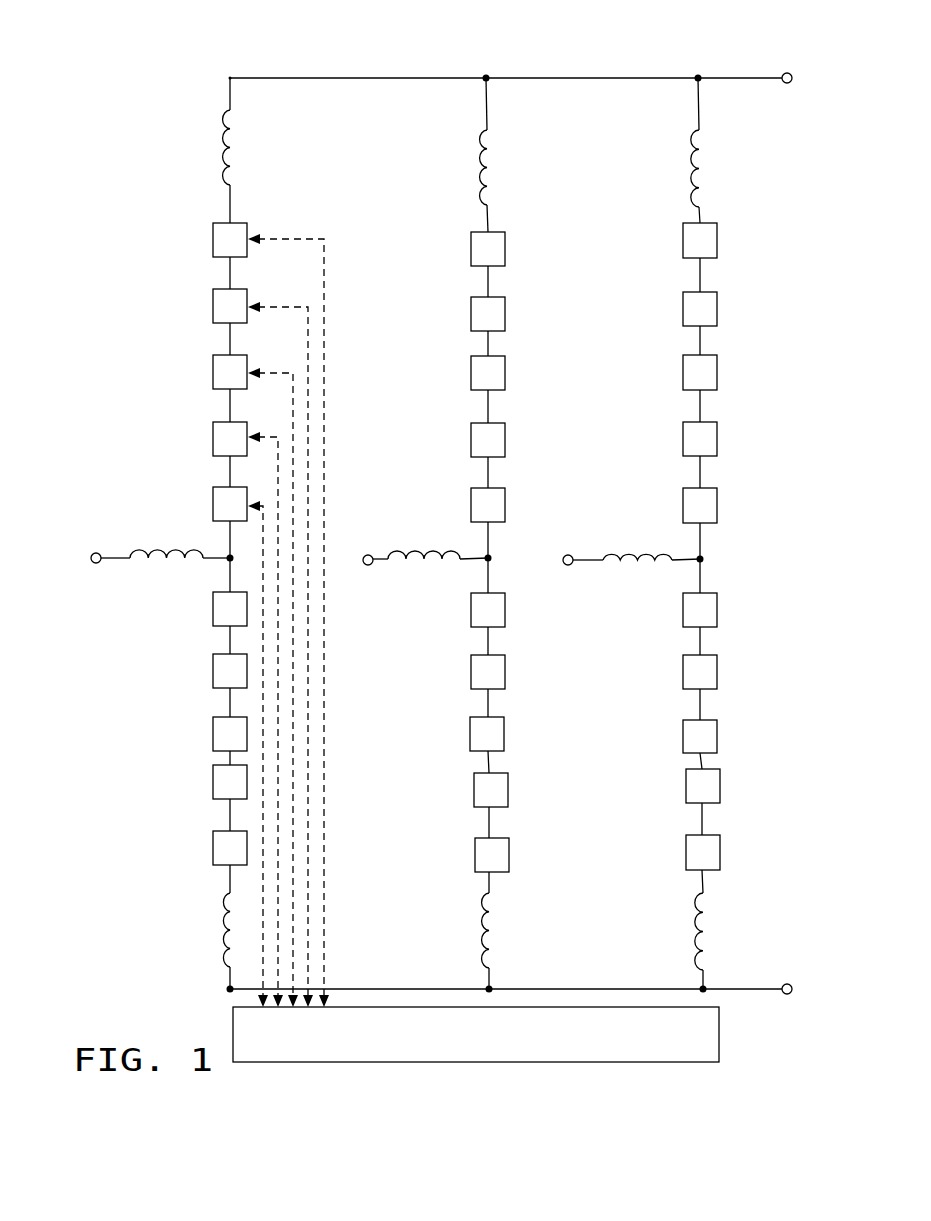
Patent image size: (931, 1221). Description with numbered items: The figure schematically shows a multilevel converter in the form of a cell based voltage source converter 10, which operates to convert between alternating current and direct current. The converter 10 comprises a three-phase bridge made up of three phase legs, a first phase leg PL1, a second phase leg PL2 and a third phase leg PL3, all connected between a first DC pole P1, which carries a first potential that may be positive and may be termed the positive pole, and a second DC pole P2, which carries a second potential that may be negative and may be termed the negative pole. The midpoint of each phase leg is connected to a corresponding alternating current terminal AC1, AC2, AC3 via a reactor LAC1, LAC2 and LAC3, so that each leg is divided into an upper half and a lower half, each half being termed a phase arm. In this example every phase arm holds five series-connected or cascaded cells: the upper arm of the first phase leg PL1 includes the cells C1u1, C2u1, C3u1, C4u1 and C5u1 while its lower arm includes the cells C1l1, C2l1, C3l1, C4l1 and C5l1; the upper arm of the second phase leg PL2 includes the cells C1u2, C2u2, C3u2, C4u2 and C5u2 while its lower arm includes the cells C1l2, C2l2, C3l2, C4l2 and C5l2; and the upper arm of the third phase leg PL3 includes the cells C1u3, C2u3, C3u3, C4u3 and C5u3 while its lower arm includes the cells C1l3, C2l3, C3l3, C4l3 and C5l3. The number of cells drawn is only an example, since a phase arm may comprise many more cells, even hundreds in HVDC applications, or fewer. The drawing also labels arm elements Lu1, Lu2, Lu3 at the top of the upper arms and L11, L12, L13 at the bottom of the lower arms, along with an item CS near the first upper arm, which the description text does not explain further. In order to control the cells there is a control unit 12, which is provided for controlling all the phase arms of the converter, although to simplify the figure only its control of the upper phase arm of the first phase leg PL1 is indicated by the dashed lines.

The cell based voltage source converter 10 is at (178, 43).
The control unit 12 is at (233, 1036).
The first DC pole P1 is at (511, 77).
The second DC pole P2 is at (511, 987).
The first phase leg PL1 is at (229, 72).
The second phase leg PL2 is at (504, 82).
The third phase leg PL3 is at (697, 83).
The upper arm inductor 1 Lu1 is at (192, 147).
The upper arm inductor 2 Lu2 is at (451, 181).
The upper arm inductor 3 Lu3 is at (666, 176).
The lower arm inductor 1 L11 is at (197, 941).
The lower arm inductor 2 L12 is at (453, 941).
The lower arm inductor 3 L13 is at (667, 941).
The current sensor CS is at (193, 199).
The alternating current terminal AC1 is at (85, 572).
The alternating current terminal AC2 is at (388, 546).
The alternating current terminal AC3 is at (557, 547).
The reactor LAC1 is at (180, 570).
The reactor LAC2 is at (438, 572).
The reactor LAC3 is at (651, 574).
The cell C1u1 is at (191, 241).
The cell C2u1 is at (191, 307).
The cell C3u1 is at (191, 373).
The cell C4u1 is at (191, 440).
The cell C5u1 is at (191, 505).
The cell C1l1 is at (190, 610).
The cell C2l1 is at (190, 672).
The cell C3l1 is at (190, 735).
The cell C4l1 is at (190, 783).
The cell C5l1 is at (190, 849).
The cell C1u2 is at (449, 249).
The cell C2u2 is at (449, 315).
The cell C3u2 is at (449, 374).
The cell C4u2 is at (449, 440).
The cell C5u2 is at (449, 505).
The cell C1l2 is at (448, 610).
The cell C2l2 is at (448, 672).
The cell C3l2 is at (448, 735).
The cell C4l2 is at (450, 791).
The cell C5l2 is at (450, 856).
The cell C1u3 is at (660, 242).
The cell C2u3 is at (660, 310).
The cell C3u3 is at (660, 373).
The cell C4u3 is at (661, 440).
The cell C5u3 is at (661, 506).
The cell C1l3 is at (660, 610).
The cell C2l3 is at (661, 672).
The cell C3l3 is at (661, 738).
The cell C4l3 is at (663, 786).
The cell C5l3 is at (663, 853).